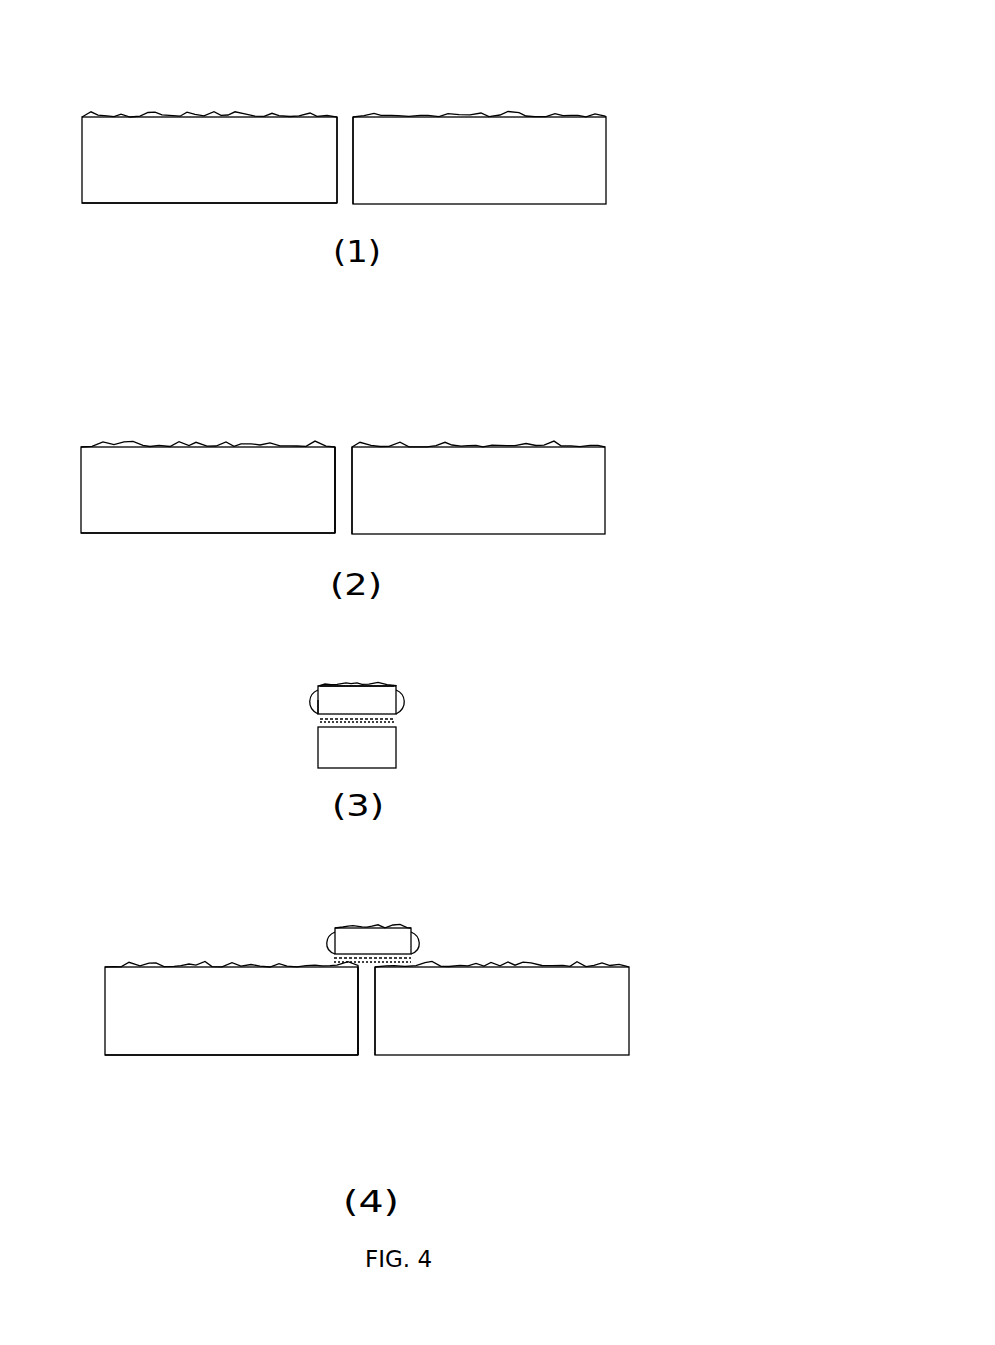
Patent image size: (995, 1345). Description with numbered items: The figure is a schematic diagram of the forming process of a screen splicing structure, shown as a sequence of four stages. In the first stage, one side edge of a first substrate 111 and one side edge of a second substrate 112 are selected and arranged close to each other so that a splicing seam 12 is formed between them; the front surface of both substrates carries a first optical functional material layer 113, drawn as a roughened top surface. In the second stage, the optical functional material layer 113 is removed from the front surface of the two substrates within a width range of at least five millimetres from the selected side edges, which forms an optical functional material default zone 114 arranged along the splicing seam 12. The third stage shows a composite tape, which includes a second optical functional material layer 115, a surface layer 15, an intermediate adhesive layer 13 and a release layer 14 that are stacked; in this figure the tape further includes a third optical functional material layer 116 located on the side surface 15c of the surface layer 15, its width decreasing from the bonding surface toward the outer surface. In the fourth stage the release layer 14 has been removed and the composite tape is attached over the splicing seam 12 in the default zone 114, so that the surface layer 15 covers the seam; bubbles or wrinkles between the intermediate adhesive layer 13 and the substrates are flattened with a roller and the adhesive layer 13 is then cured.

The first substrate 111 is at (592, 168).
The second substrate 112 is at (95, 180).
The first optical functional material layer 113 is at (177, 112).
The optical functional material default zone 114 is at (322, 442).
The splicing seam 12 is at (345, 132).
The intermediate adhesive layer 13 is at (401, 718).
The release layer 14 is at (387, 752).
The surface layer 15 is at (335, 709).
The side surface of the surface layer 15c is at (308, 720).
The second optical functional material layer 115 is at (337, 685).
The third optical functional material layer 116 is at (403, 695).